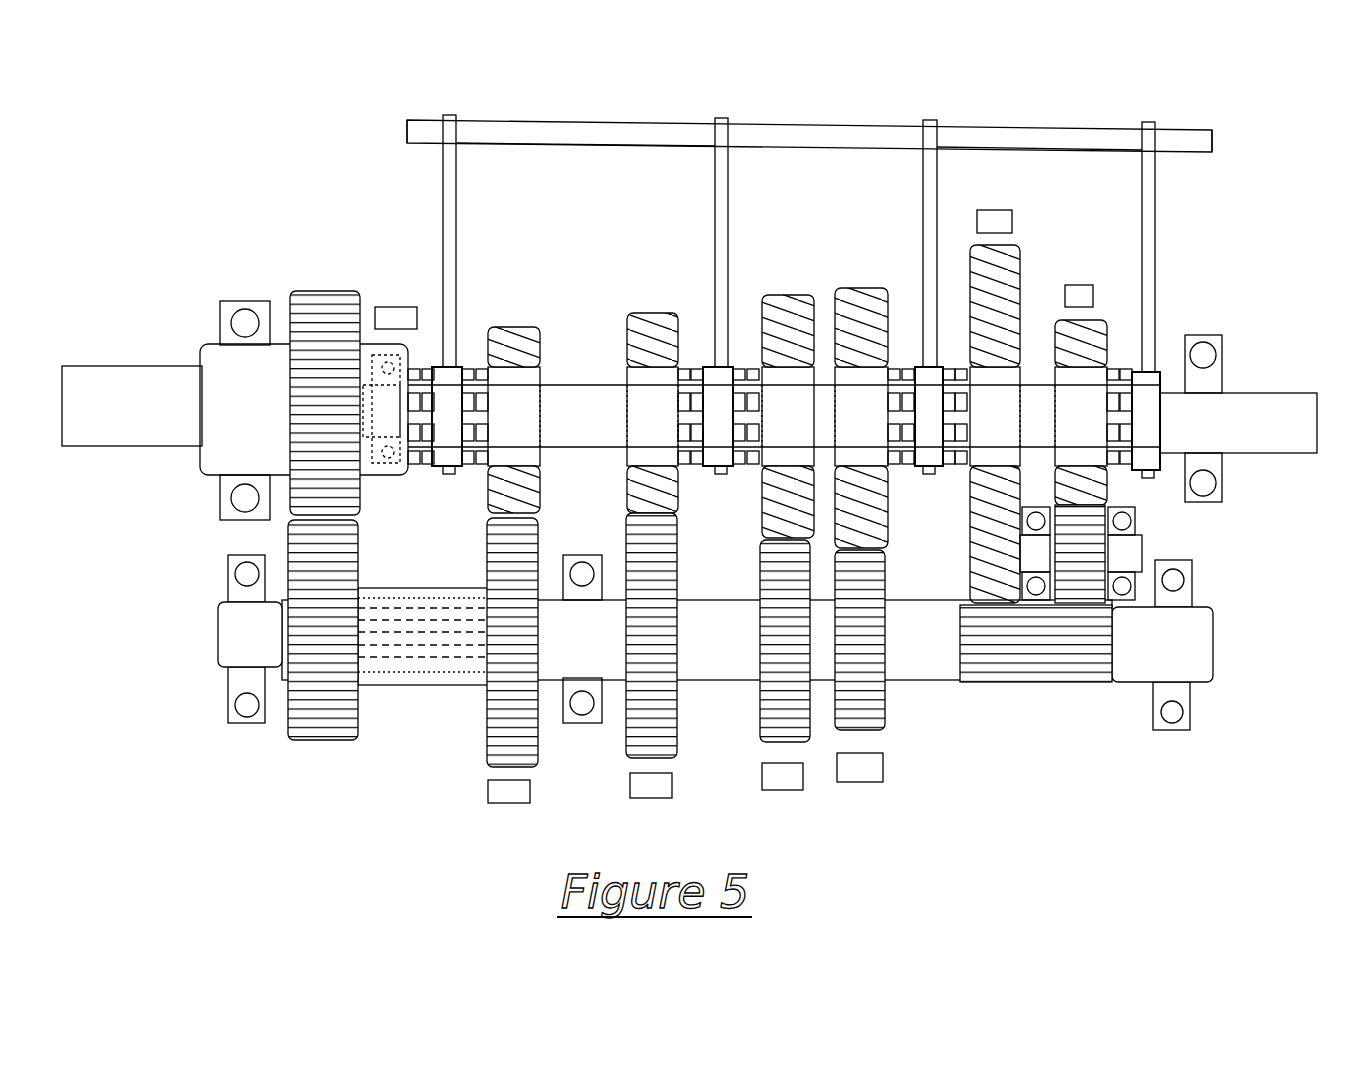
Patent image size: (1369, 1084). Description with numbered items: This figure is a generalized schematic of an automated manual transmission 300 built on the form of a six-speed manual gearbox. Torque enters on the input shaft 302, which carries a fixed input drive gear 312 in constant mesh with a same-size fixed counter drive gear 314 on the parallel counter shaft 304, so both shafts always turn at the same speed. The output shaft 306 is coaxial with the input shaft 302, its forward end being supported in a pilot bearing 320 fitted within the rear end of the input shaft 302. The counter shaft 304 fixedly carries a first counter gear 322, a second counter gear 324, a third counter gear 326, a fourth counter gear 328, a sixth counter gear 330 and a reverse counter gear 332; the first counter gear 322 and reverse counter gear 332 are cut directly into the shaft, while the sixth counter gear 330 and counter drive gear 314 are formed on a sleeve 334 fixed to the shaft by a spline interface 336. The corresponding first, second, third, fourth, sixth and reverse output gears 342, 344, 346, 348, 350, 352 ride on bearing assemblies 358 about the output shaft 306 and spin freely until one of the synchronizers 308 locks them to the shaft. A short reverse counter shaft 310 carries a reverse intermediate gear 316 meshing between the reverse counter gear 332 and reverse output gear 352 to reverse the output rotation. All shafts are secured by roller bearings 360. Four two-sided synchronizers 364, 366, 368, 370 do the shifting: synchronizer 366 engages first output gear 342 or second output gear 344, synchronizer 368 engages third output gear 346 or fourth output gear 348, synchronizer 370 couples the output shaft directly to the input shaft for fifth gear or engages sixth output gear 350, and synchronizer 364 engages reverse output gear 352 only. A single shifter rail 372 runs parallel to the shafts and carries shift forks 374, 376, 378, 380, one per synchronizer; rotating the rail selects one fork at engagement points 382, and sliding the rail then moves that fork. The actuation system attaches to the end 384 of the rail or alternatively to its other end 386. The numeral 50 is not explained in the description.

The automated manual transmission 300 is at (372, 215).
The input shaft 302 is at (110, 366).
The counter shaft 304 is at (218, 640).
The output shaft 306 is at (1278, 393).
The synchronizers 308 is at (467, 335).
The reverse counter shaft 310 is at (1145, 550).
The fixed input drive gear 312 is at (325, 290).
The fixed counter drive gear 314 is at (325, 740).
The reverse intermediate gear 316 is at (1105, 510).
The pilot bearing 320 is at (408, 360).
The first counter gear 322 is at (982, 685).
The second counter gear 324 is at (885, 723).
The third counter gear 326 is at (760, 742).
The fourth counter gear 328 is at (626, 745).
The sixth counter gear 330 is at (487, 710).
The reverse counter gear 332 is at (1073, 685).
The sleeve 334 is at (390, 588).
The spline interface 336 is at (410, 685).
The first output gear 342 is at (1022, 275).
The second output gear 344 is at (845, 290).
The third output gear 346 is at (768, 292).
The fourth output gear 348 is at (632, 308).
The sixth output gear 350 is at (530, 322).
The reverse output gear 352 is at (1108, 328).
The bearing assemblies 358 is at (822, 362).
The roller bearings 360 is at (262, 300).
The synchronizer 364 is at (1160, 378).
The synchronizer 366 is at (920, 474).
The synchronizer 368 is at (712, 474).
The synchronizer 370 is at (440, 470).
The shifter rail 372 is at (1015, 127).
The shift fork 374 is at (1155, 215).
The shift fork 376 is at (938, 213).
The shift fork 378 is at (728, 212).
The shift fork 380 is at (457, 205).
The engagement points 382 is at (470, 150).
The end of shifter rail 384 is at (1212, 141).
The other end of shifter rail 386 is at (407, 125).
The gear 50 is at (283, 735).